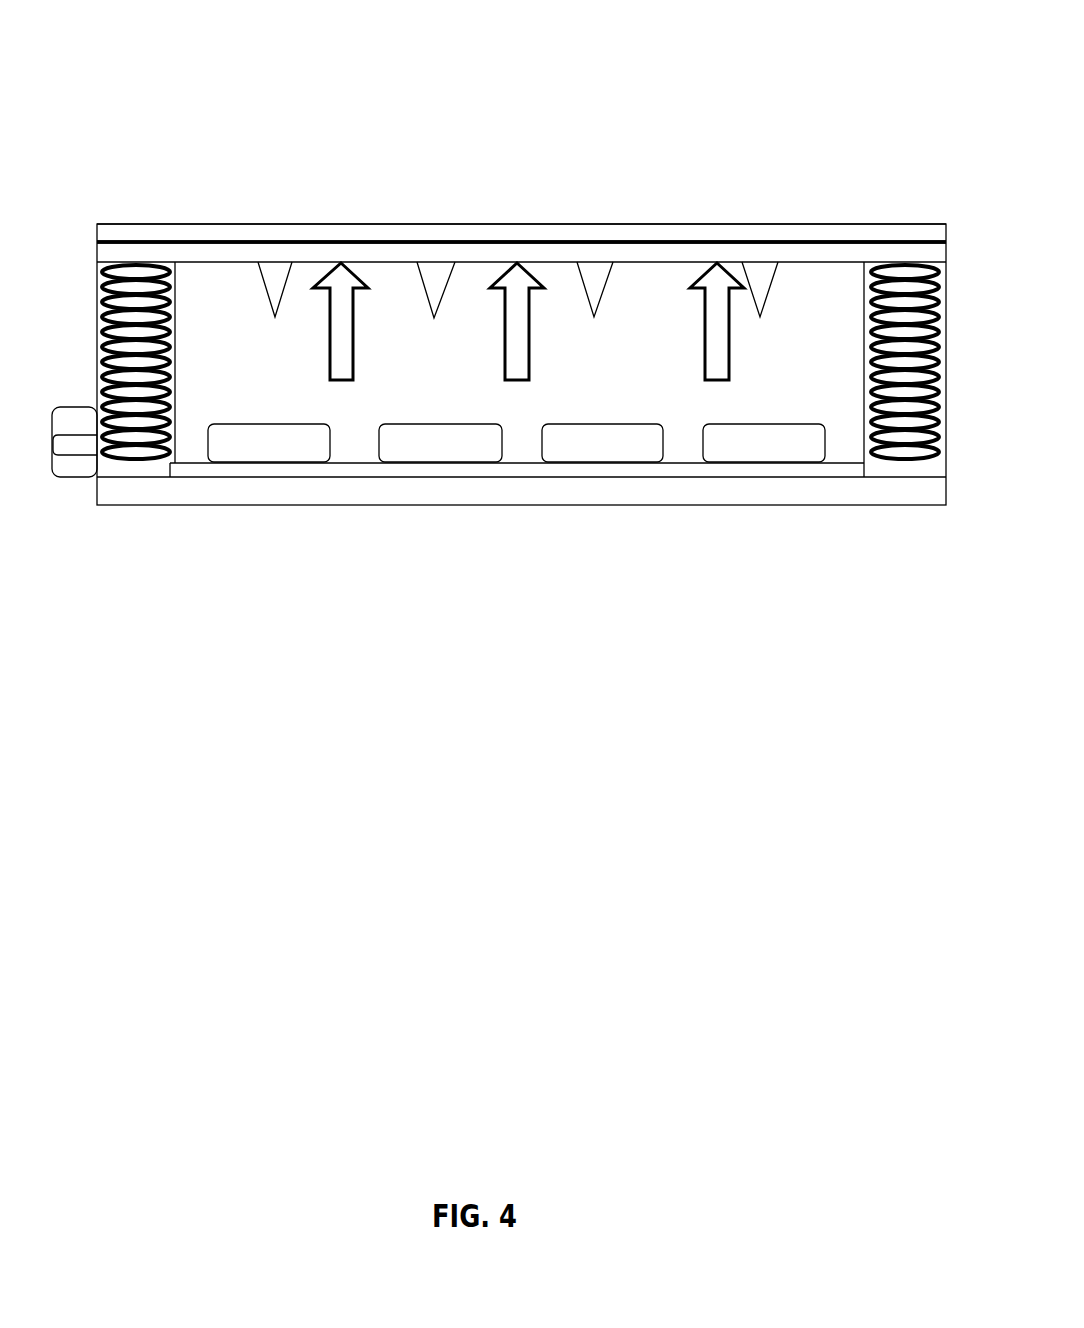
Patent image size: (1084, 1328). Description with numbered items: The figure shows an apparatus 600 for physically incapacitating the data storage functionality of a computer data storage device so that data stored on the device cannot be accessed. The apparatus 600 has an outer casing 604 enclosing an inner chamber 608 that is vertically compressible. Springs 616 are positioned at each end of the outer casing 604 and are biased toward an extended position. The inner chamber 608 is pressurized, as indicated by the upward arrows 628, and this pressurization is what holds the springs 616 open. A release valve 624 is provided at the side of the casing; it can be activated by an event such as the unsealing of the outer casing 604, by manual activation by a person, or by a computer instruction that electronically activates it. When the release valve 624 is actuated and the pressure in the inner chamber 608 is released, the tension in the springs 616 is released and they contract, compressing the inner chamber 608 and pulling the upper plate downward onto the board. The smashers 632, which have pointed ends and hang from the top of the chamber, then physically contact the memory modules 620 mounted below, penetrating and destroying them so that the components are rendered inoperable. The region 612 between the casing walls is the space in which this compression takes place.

The apparatus 600 is at (152, 147).
The outer casing 604 is at (219, 223).
The inner chamber 608 is at (673, 260).
The chamber 612 is at (805, 350).
The springs 616 is at (893, 317).
The memory modules 620 is at (282, 443).
The release valve 624 is at (77, 480).
The arrows 628 is at (343, 318).
The smashers 632 is at (273, 282).